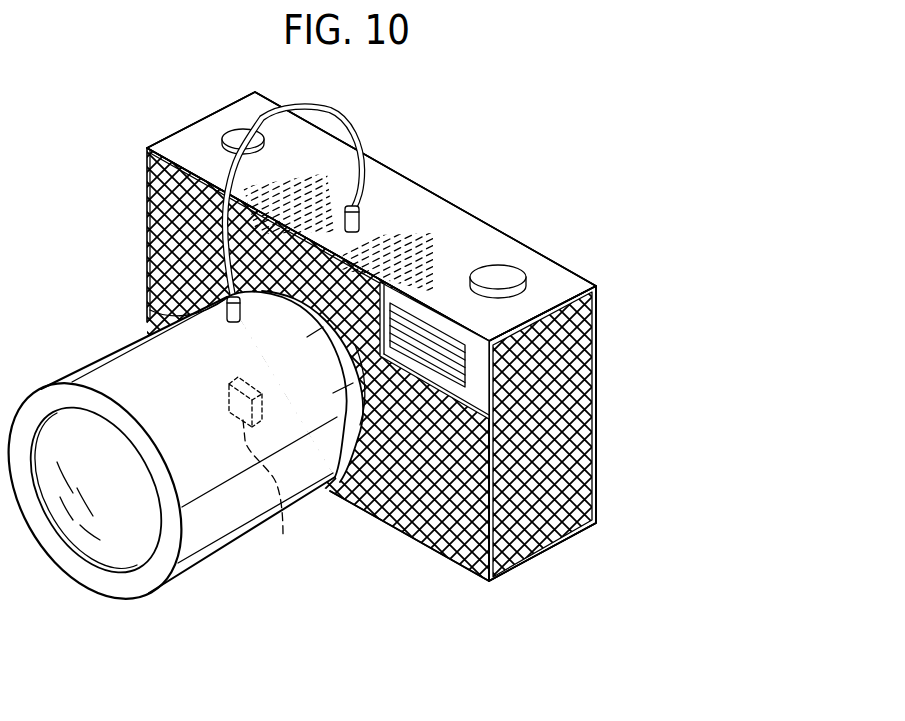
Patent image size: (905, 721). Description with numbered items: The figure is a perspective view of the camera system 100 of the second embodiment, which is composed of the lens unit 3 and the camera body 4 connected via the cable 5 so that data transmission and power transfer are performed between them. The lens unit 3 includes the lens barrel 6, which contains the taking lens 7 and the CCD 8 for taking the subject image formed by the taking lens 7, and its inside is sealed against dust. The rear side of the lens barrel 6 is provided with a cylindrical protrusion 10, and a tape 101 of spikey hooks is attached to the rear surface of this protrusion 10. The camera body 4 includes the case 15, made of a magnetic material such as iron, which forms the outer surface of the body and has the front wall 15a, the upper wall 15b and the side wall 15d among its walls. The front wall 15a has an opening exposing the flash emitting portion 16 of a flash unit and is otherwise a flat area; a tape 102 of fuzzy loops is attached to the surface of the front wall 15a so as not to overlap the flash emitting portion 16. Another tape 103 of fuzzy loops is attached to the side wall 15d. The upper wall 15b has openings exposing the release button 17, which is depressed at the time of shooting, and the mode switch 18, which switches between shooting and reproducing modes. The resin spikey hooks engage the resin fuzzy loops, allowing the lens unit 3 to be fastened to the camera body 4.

The camera system 100 is at (415, 646).
The case 15 is at (562, 270).
The front wall 15a is at (350, 507).
The upper wall 15b is at (445, 215).
The side wall 15d is at (570, 398).
The tape of fuzzy loops 102 is at (447, 540).
The tape of fuzzy loops 103 is at (524, 540).
The camera body 4 is at (594, 539).
The flash emitting portion 16 is at (440, 347).
The mode switch 18 is at (508, 275).
The release button 17 is at (232, 133).
The cable 5 is at (333, 112).
The lens unit 3 is at (241, 556).
The lens barrel 6 is at (192, 548).
The taking lens 7 is at (128, 542).
The tape of spikey hooks 101 is at (150, 311).
The protrusion 10 is at (327, 356).
The CCD 8 is at (265, 490).